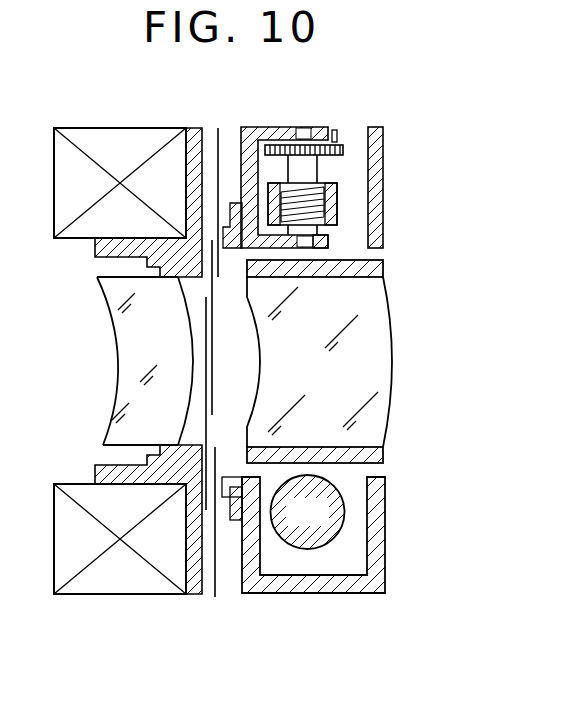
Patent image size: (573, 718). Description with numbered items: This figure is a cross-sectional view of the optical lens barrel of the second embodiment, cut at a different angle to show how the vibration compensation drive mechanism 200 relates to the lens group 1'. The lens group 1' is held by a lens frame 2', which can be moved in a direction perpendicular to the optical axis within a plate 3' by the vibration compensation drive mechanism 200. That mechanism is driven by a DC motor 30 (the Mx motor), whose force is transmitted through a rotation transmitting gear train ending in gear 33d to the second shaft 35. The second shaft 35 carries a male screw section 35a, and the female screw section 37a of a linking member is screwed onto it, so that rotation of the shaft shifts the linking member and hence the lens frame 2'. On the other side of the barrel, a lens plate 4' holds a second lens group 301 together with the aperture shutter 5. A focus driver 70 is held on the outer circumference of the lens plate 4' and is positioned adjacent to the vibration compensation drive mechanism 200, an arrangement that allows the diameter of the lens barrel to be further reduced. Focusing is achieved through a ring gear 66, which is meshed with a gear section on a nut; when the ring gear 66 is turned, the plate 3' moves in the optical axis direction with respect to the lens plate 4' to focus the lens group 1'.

The focus driver 70 is at (112, 137).
The ring gear 66 is at (231, 203).
The vibration compensation drive mechanism 200 is at (352, 121).
The rotation transmitting gear train 33d is at (343, 150).
The second shaft 35 is at (302, 172).
The female screw section 37a is at (338, 200).
The male screw section 35a is at (330, 240).
The lens plate 4' is at (126, 361).
The lens frame 2' is at (351, 295).
The aperture shutter 5 is at (206, 358).
The lens group 1' is at (347, 362).
The lens group 301 is at (105, 443).
The plate 3' is at (346, 535).
The DC motor 30 is at (310, 546).